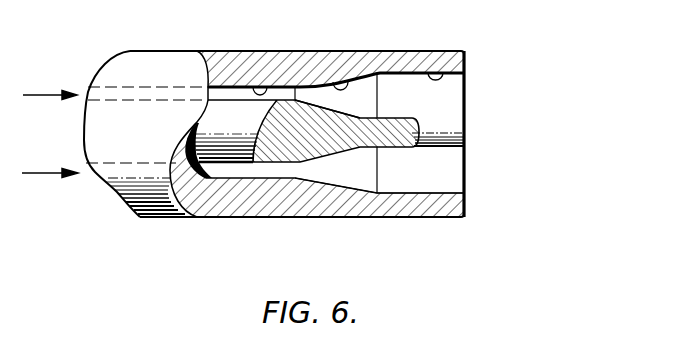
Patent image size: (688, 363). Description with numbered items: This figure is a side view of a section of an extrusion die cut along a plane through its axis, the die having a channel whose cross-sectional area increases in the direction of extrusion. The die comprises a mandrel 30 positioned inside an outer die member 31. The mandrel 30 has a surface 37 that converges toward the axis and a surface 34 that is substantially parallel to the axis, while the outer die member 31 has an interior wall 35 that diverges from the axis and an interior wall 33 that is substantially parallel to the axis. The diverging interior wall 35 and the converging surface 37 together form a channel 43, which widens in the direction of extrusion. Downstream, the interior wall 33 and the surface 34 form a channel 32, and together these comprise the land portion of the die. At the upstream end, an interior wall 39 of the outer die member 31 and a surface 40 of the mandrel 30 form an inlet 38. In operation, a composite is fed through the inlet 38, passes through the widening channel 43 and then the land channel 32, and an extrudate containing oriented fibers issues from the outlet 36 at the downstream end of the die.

The mandrel 30 is at (466, 134).
The outer die member 31 is at (466, 62).
The channel 32 is at (423, 175).
The interior wall 33 is at (441, 74).
The surface 34 is at (438, 112).
The interior wall 35 is at (342, 84).
The outlet 36 is at (455, 88).
The surface 37 is at (348, 112).
The inlet 38 is at (284, 170).
The interior wall 39 is at (257, 86).
The surface 40 is at (232, 165).
The channel 43 is at (346, 175).